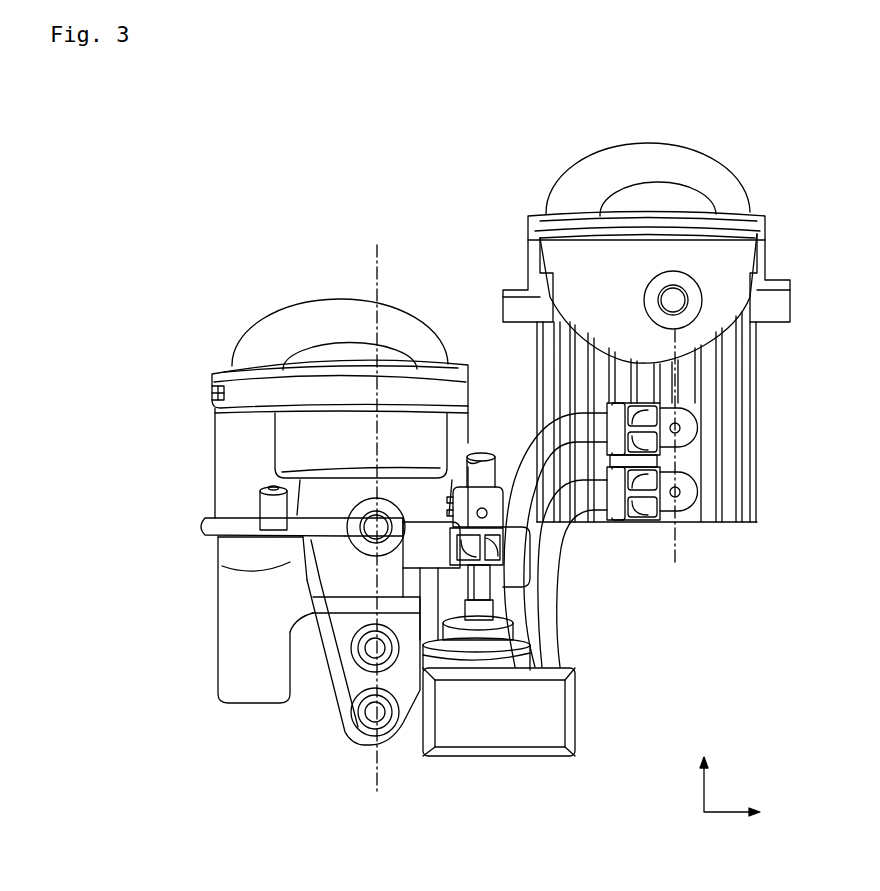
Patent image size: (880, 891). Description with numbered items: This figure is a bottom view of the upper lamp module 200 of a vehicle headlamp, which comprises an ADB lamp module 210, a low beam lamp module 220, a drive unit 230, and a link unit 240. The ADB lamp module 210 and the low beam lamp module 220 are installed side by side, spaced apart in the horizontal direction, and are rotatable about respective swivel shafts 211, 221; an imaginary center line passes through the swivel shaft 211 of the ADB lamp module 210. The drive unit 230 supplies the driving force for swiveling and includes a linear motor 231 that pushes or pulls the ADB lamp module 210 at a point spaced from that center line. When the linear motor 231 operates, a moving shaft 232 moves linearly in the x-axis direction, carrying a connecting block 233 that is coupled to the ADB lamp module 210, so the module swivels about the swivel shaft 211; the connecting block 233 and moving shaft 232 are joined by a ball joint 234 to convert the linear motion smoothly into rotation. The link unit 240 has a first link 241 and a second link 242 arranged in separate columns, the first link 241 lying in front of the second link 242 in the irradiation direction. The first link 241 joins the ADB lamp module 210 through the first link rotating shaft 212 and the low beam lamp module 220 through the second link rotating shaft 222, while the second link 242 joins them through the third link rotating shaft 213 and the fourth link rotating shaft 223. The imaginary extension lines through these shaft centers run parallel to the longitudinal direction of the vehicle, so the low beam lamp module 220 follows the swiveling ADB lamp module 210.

The upper lamp module 200 is at (320, 212).
The ADB lamp module 210 is at (209, 471).
The swivel shaft 211 is at (372, 532).
The 1-1 link rotating shaft 212 is at (370, 650).
The 2-1 link rotating shaft 213 is at (372, 712).
The low beam lamp module 220 is at (522, 253).
The swivel shaft 221 is at (680, 304).
The 1-2 link rotating shaft 222 is at (680, 428).
The 2-2 link rotating shaft 223 is at (680, 492).
The drive unit 230 is at (541, 762).
The linear motor 231 is at (465, 662).
The moving shaft 232 is at (497, 552).
The connecting block 233 is at (481, 574).
The ball joint 234 is at (481, 592).
The link unit 240 is at (712, 631).
The first link 241 is at (533, 500).
The second link 242 is at (557, 575).